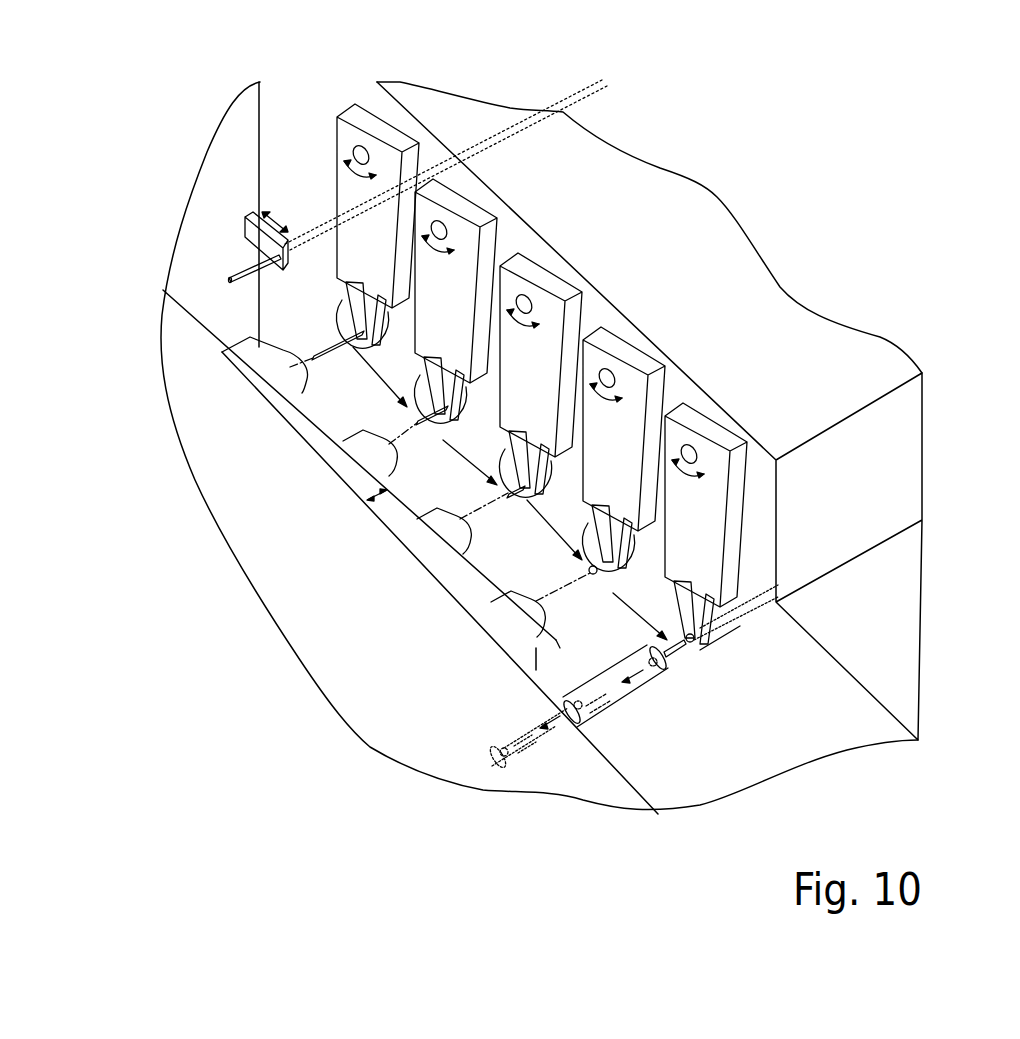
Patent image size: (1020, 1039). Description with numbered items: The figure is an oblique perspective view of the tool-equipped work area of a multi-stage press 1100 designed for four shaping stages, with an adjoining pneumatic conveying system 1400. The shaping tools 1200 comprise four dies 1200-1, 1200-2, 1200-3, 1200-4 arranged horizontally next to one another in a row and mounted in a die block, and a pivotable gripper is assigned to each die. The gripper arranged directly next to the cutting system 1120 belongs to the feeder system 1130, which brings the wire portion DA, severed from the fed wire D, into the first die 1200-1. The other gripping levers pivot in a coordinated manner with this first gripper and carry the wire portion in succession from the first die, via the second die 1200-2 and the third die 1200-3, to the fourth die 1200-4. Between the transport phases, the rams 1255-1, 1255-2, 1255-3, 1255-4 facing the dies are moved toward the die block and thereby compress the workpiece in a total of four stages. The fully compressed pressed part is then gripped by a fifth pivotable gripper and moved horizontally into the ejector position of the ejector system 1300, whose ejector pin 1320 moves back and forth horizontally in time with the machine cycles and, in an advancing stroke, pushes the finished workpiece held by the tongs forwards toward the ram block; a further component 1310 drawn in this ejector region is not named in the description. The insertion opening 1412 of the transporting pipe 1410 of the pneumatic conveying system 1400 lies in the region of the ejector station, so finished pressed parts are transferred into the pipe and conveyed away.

The multi-stage press 1100 is at (137, 100).
The feeder system 1130 is at (310, 100).
The cutting system 1120 is at (233, 213).
The wire portion DA is at (237, 270).
The fed wire D is at (590, 92).
The shaping tools 1200 is at (763, 393).
The first die 1200-1 is at (363, 350).
The second die 1200-2 is at (443, 440).
The third die 1200-3 is at (529, 515).
The fourth die 1200-4 is at (612, 585).
The first ram 1255-1 is at (280, 358).
The second ram 1255-2 is at (367, 443).
The third ram 1255-3 is at (440, 520).
The fourth ram 1255-4 is at (514, 603).
The ejector system 1300 is at (745, 585).
The ejector pin 1320 is at (737, 626).
The guide surface 1310 is at (730, 645).
The pneumatic conveying system 1400 is at (570, 765).
The transporting pipe 1410 is at (612, 700).
The insertion opening 1412 is at (677, 670).